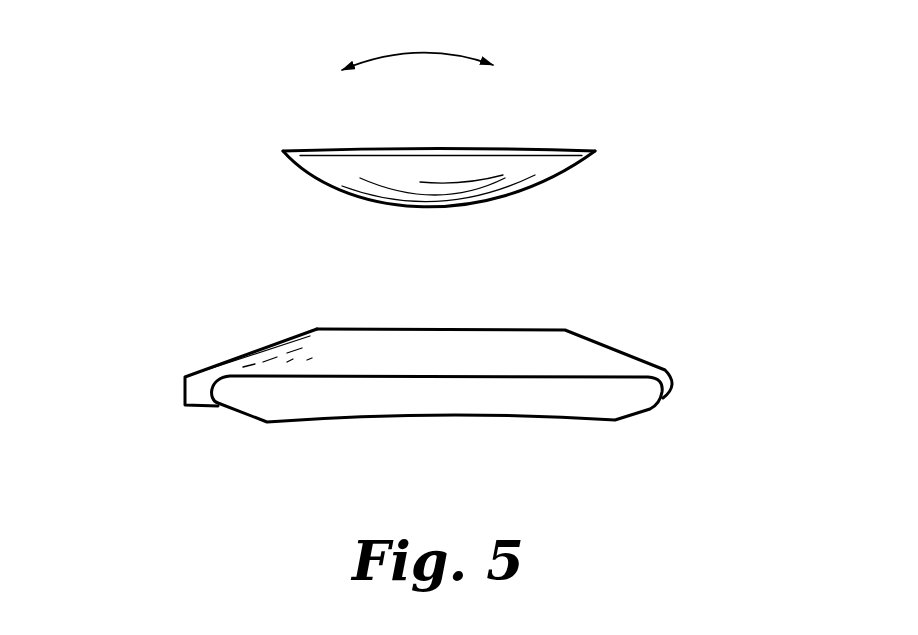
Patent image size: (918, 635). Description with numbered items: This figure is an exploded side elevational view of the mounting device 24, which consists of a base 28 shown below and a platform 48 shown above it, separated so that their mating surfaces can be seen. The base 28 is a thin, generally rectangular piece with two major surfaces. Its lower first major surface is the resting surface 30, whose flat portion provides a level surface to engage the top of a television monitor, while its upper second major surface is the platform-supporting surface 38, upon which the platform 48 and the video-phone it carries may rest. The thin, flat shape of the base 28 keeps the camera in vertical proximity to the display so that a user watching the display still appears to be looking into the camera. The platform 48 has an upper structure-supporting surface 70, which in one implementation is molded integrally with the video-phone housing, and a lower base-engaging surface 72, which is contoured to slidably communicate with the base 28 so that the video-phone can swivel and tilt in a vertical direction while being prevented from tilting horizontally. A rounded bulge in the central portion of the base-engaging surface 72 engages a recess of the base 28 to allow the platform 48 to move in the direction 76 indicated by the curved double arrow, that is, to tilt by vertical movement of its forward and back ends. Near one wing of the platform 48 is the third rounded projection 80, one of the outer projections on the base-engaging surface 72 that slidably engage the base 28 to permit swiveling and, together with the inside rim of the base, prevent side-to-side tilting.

The mounting device 24 is at (147, 123).
The base 28 is at (466, 378).
The resting surface 30 is at (462, 415).
The platform-supporting surface 38 is at (463, 330).
The platform 48 is at (468, 133).
The structure-supporting surface 70 is at (385, 150).
The base-engaging surface 72 is at (363, 200).
The direction 76 is at (407, 53).
The third rounded projection 80 is at (505, 200).